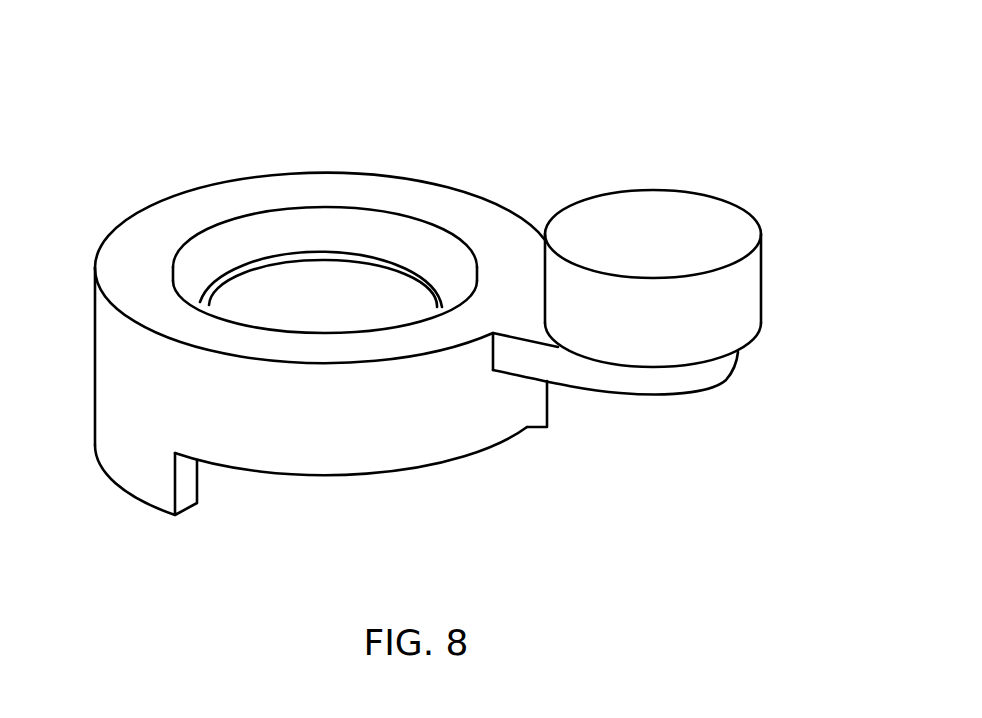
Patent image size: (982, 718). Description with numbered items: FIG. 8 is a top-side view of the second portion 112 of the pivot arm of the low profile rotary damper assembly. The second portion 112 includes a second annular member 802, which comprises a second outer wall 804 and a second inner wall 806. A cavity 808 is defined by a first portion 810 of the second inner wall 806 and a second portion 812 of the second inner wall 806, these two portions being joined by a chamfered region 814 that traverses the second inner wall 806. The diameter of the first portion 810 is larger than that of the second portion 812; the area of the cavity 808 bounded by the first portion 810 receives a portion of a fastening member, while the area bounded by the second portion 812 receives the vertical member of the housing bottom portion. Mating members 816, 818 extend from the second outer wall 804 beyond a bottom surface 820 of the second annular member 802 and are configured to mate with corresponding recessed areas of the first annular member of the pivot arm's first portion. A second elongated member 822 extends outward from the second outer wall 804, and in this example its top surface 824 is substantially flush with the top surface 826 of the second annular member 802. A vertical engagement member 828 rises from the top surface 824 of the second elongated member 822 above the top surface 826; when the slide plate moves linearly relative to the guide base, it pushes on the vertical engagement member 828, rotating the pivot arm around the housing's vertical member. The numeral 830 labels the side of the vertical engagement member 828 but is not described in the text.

The second portion of the pivot arm 112 is at (349, 47).
The second annular member 802 is at (97, 392).
The second outer wall 804 is at (351, 453).
The second inner wall 806 is at (437, 251).
The cavity 808 is at (311, 302).
The first portion of the second inner wall 810 is at (196, 256).
The second portion of the second inner wall 812 is at (376, 282).
The chamfered region 814 is at (198, 287).
The mating member 816 is at (136, 499).
The mating member 818 is at (541, 432).
The bottom surface 820 is at (475, 457).
The second elongated member 822 is at (728, 378).
The top surface of the second elongated member 824 is at (531, 312).
The top surface of the second annular member 826 is at (513, 240).
The vertical engagement member 828 is at (731, 201).
The post side wall 830 is at (754, 295).